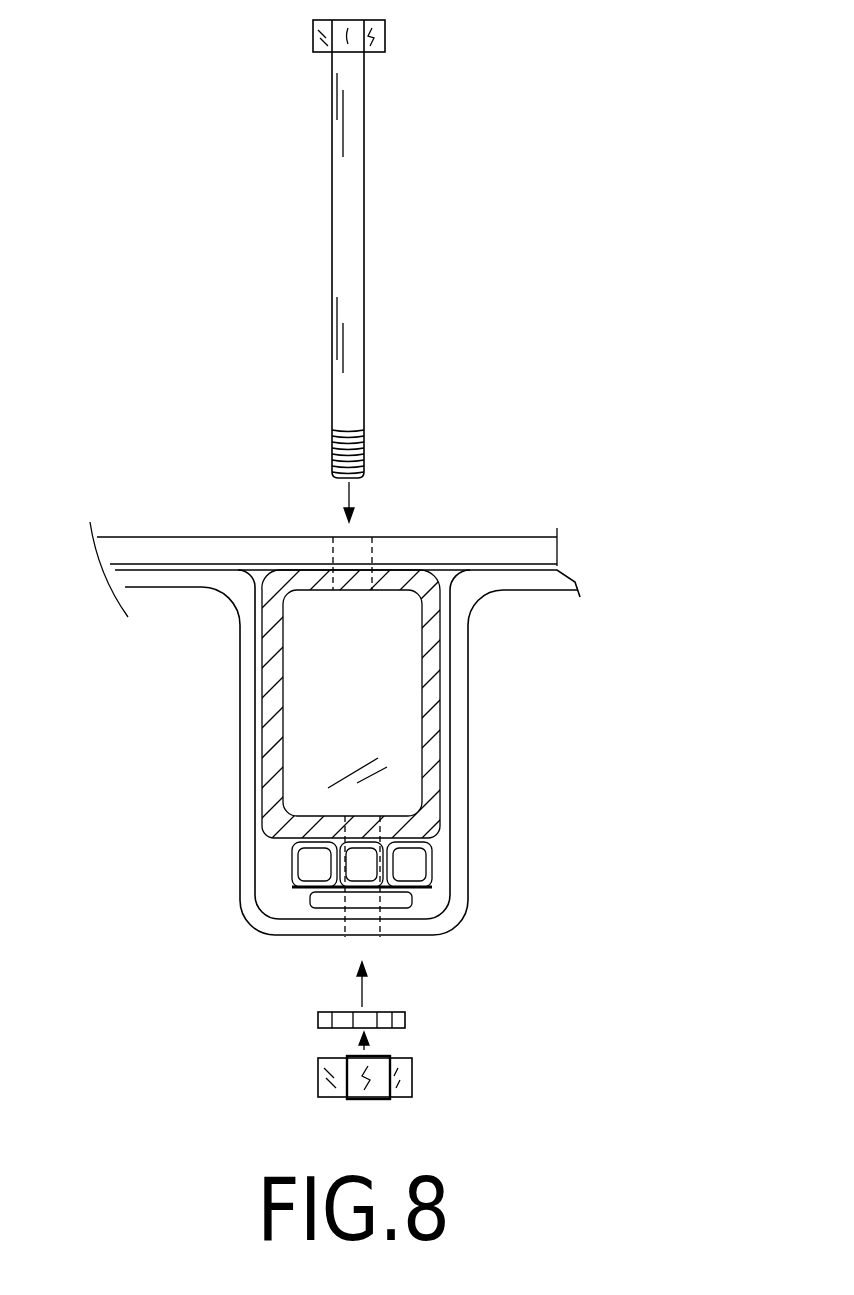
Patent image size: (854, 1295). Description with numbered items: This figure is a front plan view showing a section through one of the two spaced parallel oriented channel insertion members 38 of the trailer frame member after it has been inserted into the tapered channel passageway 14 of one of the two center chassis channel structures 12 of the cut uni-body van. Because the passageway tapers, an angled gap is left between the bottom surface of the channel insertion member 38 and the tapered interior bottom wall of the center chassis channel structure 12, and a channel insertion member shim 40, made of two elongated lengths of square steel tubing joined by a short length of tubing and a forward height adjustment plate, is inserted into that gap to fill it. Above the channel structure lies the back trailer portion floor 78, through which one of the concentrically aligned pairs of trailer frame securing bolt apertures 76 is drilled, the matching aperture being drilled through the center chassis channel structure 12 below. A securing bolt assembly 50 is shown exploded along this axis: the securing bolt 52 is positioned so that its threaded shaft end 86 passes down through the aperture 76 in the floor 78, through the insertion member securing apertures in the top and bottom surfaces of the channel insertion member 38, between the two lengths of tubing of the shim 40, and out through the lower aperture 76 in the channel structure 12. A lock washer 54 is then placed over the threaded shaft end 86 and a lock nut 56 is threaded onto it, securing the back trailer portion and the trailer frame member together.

The center chassis channel structure 12 is at (228, 740).
The tapered channel passageway 14 is at (440, 858).
The channel insertion member 38 is at (430, 636).
The channel insertion member shim 40 is at (280, 862).
The securing bolt assembly 50 is at (478, 271).
The securing bolt 52 is at (347, 168).
The lock washer 54 is at (318, 1020).
The lock nut 56 is at (412, 1073).
The trailer frame securing bolt aperture 76 is at (355, 560).
The back trailer portion floor 78 is at (128, 537).
The threaded shaft end 86 is at (362, 438).